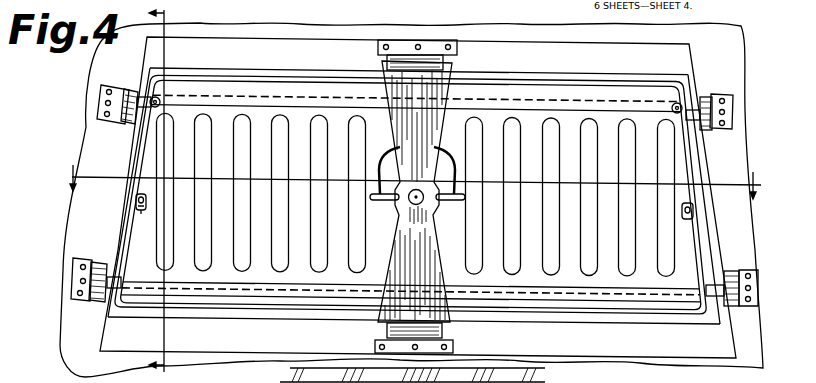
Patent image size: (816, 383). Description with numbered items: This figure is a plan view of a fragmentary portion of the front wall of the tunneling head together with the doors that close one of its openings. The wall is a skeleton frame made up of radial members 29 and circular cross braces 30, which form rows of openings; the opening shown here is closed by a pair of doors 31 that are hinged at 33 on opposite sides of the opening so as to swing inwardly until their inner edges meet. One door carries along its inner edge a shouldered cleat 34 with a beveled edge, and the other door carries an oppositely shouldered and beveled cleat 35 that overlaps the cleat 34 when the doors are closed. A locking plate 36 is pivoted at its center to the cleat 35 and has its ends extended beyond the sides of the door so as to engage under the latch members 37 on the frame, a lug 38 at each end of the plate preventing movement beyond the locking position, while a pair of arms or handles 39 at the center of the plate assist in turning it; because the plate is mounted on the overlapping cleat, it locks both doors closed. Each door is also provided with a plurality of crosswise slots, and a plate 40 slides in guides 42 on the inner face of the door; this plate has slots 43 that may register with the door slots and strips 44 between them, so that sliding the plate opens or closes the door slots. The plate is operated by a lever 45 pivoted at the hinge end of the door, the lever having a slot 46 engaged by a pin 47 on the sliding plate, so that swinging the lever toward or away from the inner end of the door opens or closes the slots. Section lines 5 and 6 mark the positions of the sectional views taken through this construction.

The section line 5- 5 is at (411, 177).
The section line 6- 6 is at (169, 194).
The radial members 29 is at (84, 128).
The circular cross braces 30 is at (419, 64).
The doors 31 is at (546, 328).
The hinges 33 is at (134, 92).
The shouldered cleat 34 is at (399, 213).
The cleat 35 is at (433, 213).
The locking plate 36 is at (415, 191).
The latch members 37 is at (378, 46).
The lug 38 is at (376, 62).
The arms or handles 39 is at (417, 172).
The sliding plate 40 is at (181, 121).
The guides 42 is at (222, 104).
The slots 43 is at (316, 253).
The strips 44 is at (500, 196).
The lever 45 is at (128, 246).
The slot 46 is at (136, 196).
The pin 47 is at (139, 210).